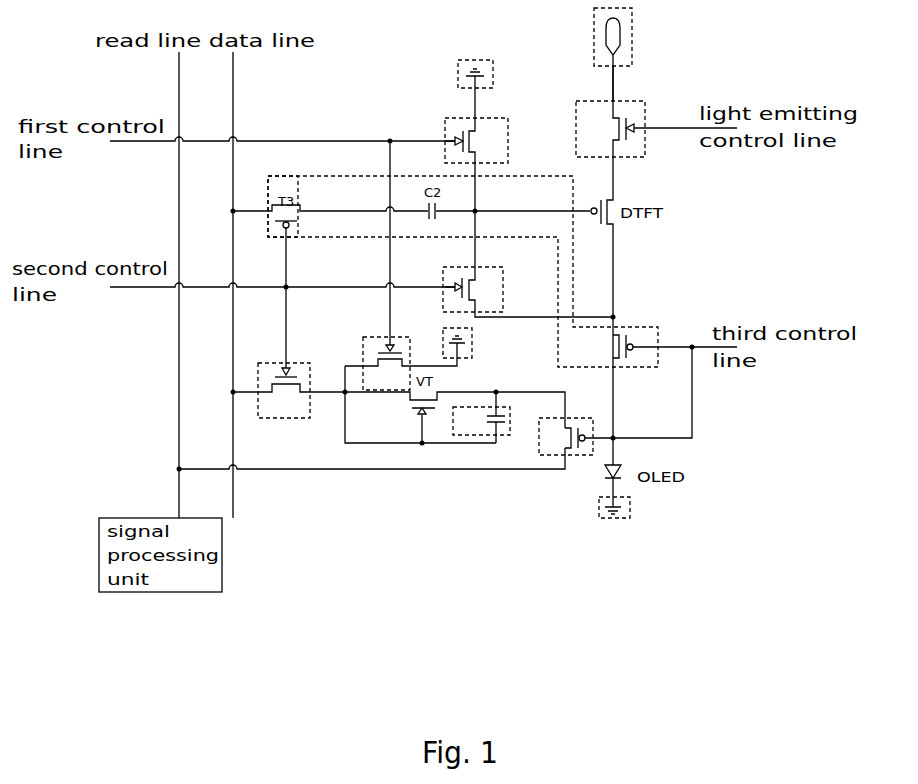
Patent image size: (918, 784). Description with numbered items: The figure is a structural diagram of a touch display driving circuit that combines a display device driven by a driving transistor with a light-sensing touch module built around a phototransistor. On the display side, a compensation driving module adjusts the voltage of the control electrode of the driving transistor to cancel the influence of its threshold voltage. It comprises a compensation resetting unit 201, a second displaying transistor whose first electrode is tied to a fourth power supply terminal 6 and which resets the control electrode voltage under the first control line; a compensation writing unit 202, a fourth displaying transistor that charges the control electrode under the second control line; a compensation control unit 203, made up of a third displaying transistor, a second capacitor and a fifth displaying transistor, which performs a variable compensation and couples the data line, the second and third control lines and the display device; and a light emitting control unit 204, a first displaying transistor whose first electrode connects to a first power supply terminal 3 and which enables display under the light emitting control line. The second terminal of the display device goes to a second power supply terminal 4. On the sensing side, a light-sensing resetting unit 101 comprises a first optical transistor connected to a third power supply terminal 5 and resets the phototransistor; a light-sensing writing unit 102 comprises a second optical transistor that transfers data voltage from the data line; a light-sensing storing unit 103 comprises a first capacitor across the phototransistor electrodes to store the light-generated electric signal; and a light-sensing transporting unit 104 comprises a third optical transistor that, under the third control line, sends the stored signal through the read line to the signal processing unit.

The first power supply terminal 3 is at (632, 32).
The fourth power supply terminal 6 is at (493, 68).
The compensation resetting unit 201 is at (508, 128).
The light emitting control unit 204 is at (645, 106).
The compensation writing unit 202 is at (503, 290).
The compensation control unit 203 is at (658, 330).
The third power supply terminal 5 is at (472, 340).
The second power supply terminal 4 is at (630, 506).
The light-sensing resetting unit 101 is at (380, 338).
The light-sensing writing unit 102 is at (273, 364).
The light-sensing storing unit 103 is at (510, 418).
The light-sensing transporting unit 104 is at (568, 416).